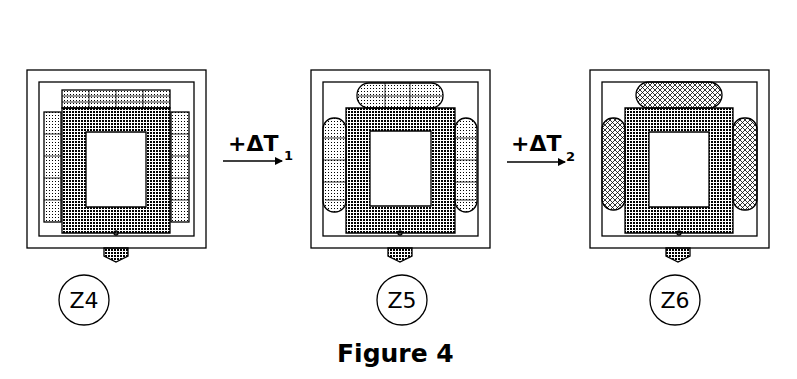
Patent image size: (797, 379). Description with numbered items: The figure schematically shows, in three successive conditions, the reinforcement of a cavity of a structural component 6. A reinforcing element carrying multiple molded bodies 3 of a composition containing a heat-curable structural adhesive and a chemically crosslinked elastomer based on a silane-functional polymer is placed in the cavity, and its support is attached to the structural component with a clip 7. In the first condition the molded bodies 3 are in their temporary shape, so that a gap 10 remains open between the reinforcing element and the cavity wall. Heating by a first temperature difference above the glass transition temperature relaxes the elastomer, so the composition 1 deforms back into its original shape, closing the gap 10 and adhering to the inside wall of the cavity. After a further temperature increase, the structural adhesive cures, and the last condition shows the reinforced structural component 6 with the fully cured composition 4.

The composition in the original shape 1 is at (392, 90).
The molded body 3 is at (137, 97).
The fully hardened composition 4 is at (672, 97).
The structural component 6 is at (52, 75).
The clip 7 is at (123, 261).
The gap 10 is at (98, 85).